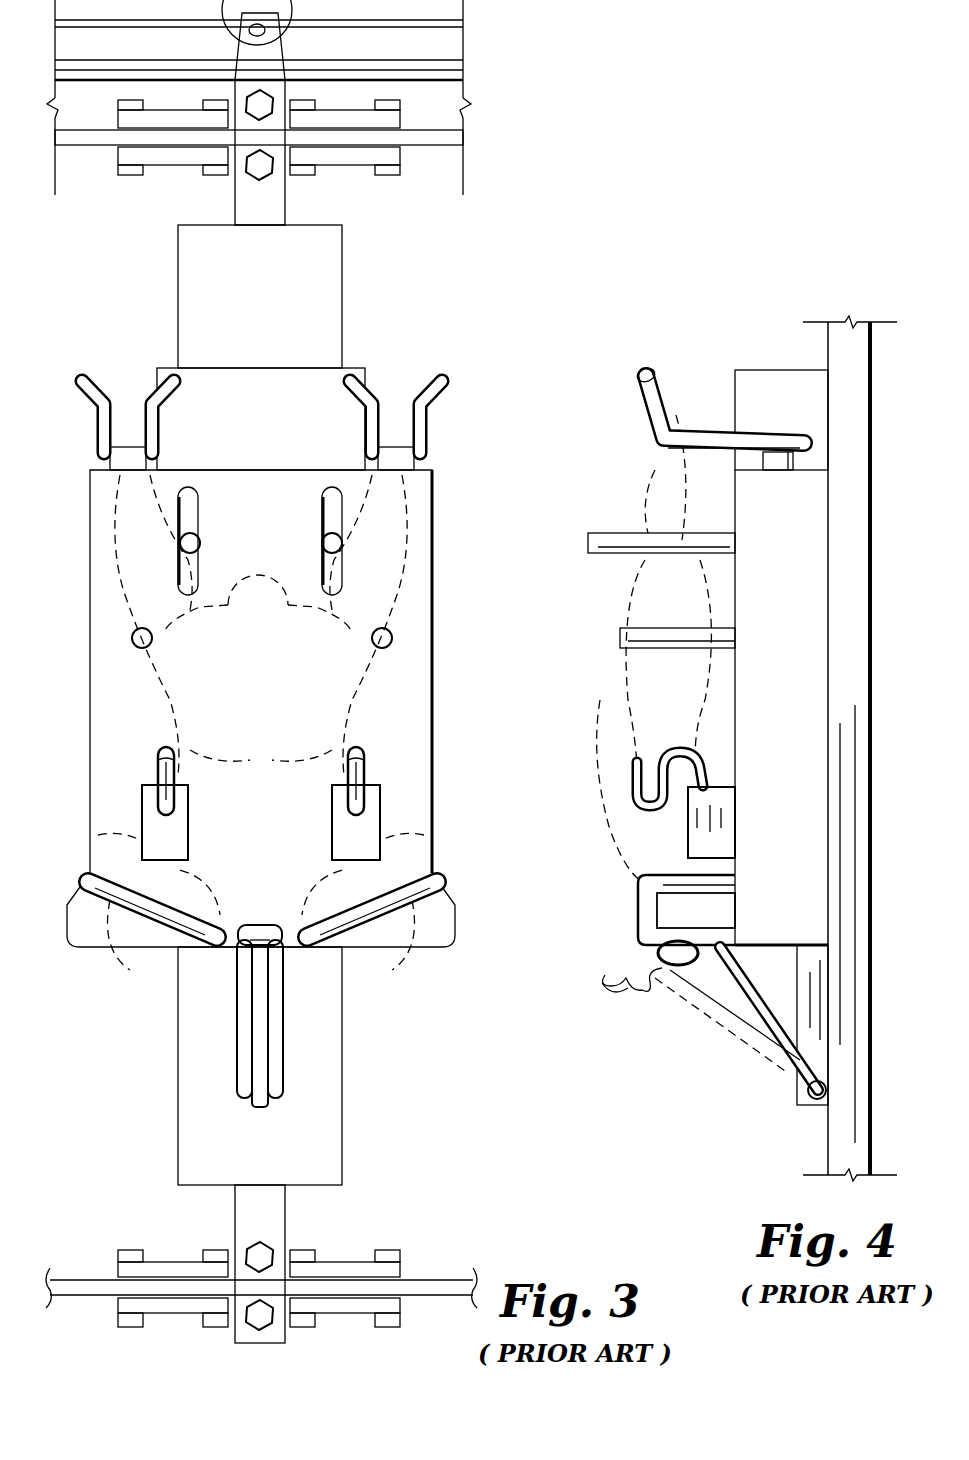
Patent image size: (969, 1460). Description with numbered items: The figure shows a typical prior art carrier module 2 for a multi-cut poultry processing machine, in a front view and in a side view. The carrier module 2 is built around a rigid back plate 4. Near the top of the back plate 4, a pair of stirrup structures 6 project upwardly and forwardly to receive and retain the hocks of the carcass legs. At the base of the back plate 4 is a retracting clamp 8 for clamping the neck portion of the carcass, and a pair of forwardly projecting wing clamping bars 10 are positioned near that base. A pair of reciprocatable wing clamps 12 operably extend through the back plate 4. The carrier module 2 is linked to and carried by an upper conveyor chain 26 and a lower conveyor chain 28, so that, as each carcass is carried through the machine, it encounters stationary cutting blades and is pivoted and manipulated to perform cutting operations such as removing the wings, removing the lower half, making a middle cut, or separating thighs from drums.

In FIG. 3, the carrier module 2 is at (285, 432).
In FIG. 4, the carrier module 2 is at (813, 490).
In FIG. 3, the rigid back plate 4 is at (122, 680).
In FIG. 4, the rigid back plate 4 is at (793, 657).
In FIG. 3, the stirrup structures 6 is at (110, 393).
In FIG. 4, the stirrup structures 6 is at (667, 390).
In FIG. 3, the retracting clamp 8 is at (278, 1035).
In FIG. 4, the retracting clamp 8 is at (768, 1015).
In FIG. 3, the wing clamping bars 10 is at (162, 930).
In FIG. 4, the wing clamping bars 10 is at (645, 905).
In FIG. 3, the reciprocatable wing clamps 12 is at (162, 782).
In FIG. 4, the reciprocatable wing clamps 12 is at (638, 785).
In FIG. 3, the upper conveyor chain 26 is at (345, 165).
In FIG. 3, the lower conveyor chain 28 is at (177, 1270).